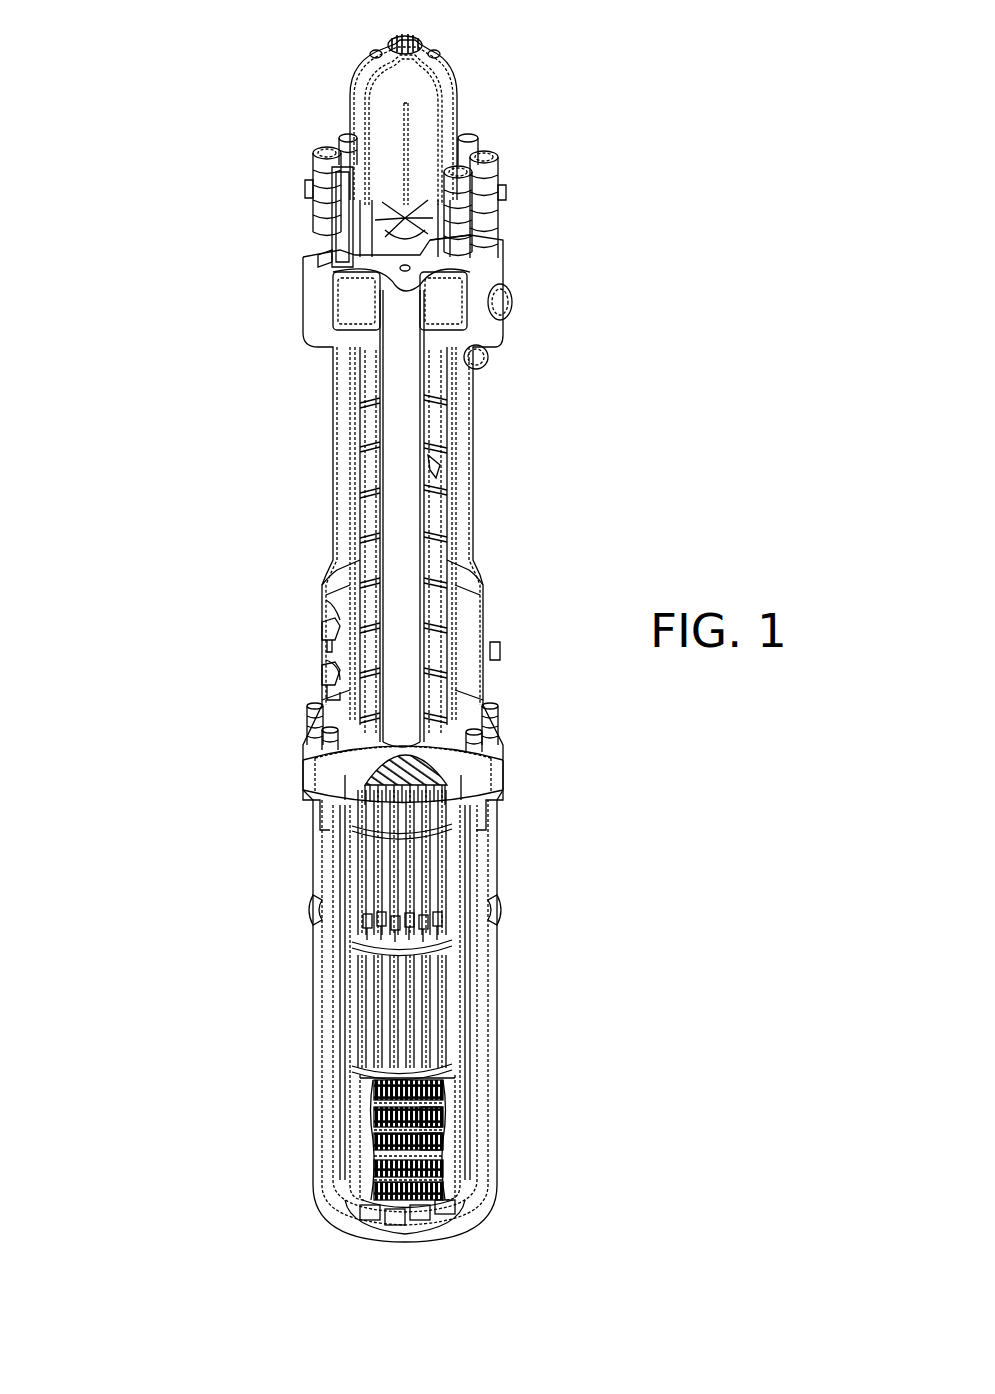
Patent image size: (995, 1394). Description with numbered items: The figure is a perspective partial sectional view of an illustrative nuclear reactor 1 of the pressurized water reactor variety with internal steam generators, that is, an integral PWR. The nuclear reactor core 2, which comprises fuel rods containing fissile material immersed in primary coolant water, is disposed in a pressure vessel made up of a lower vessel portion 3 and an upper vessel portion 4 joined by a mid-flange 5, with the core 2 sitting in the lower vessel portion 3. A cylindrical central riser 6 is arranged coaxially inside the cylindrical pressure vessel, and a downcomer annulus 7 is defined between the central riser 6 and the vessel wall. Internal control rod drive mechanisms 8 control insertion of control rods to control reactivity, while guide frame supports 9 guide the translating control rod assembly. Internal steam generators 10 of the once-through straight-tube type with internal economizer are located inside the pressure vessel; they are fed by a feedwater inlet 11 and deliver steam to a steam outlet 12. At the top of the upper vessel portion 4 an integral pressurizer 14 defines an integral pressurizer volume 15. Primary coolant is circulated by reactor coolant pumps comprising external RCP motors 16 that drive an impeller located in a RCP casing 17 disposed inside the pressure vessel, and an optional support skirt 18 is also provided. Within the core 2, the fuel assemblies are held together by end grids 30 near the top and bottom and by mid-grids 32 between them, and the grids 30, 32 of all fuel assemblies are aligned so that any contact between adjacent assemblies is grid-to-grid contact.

The nuclear reactor 1 is at (603, 545).
The nuclear reactor core 2 is at (383, 1145).
The lower vessel portion 3 is at (483, 1030).
The upper vessel portion 4 is at (463, 467).
The mid-flange 5 is at (487, 762).
The central riser 6 is at (420, 413).
The downcomer annulus 7 is at (437, 490).
The internal control rod drive mechanisms 8 is at (390, 888).
The guide frame supports 9 is at (390, 995).
The internal steam generators 10 is at (367, 437).
The feedwater inlet 11 is at (323, 676).
The steam outlet 12 is at (323, 633).
The integral pressurizer 14 is at (455, 97).
The integral pressurizer volume 15 is at (392, 103).
The external RCP motors 16 is at (497, 167).
The RCP casing 17 is at (453, 302).
The support skirt 18 is at (497, 902).
The end grids 30 is at (390, 1078).
The mid-grids 32 is at (428, 1157).